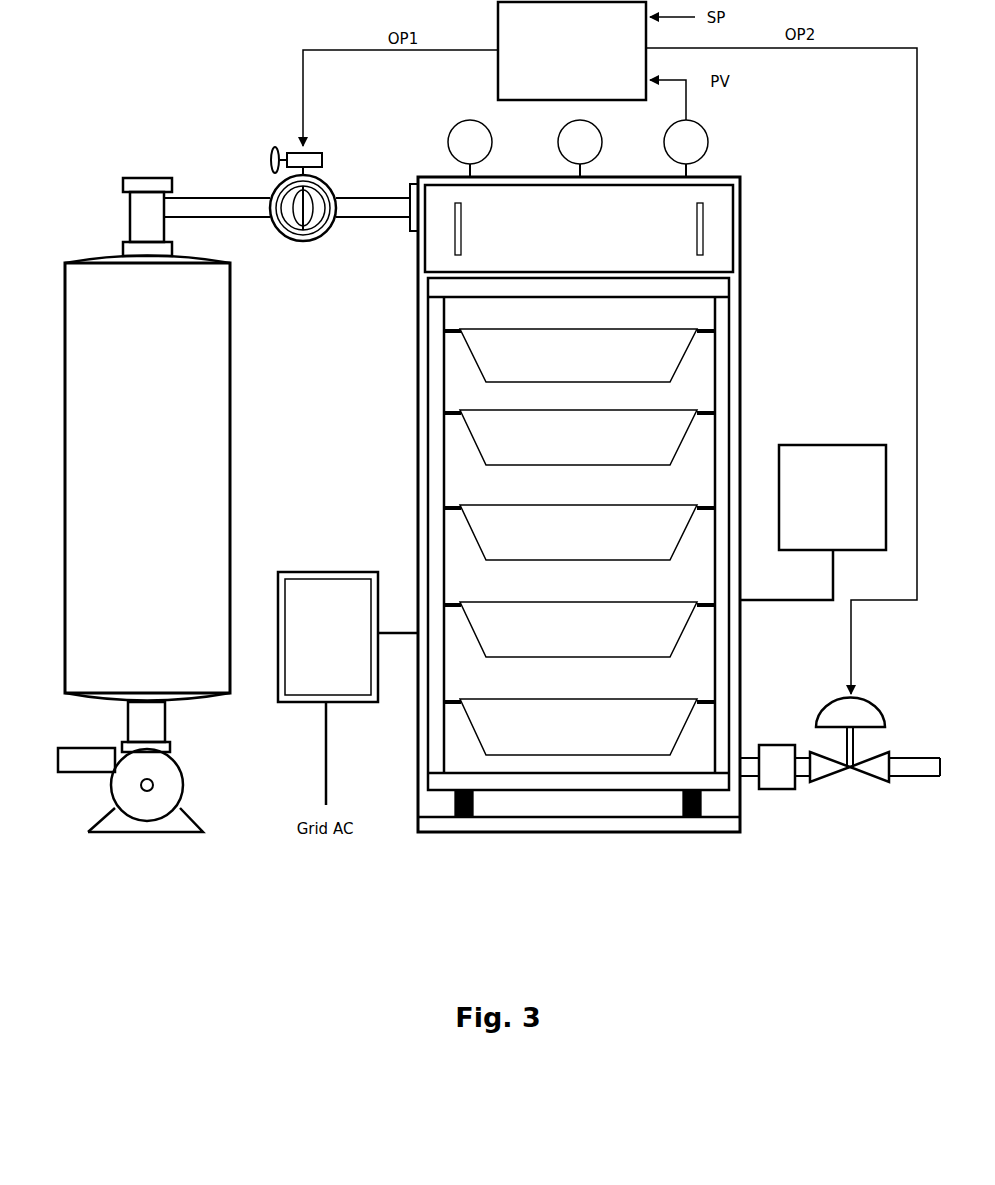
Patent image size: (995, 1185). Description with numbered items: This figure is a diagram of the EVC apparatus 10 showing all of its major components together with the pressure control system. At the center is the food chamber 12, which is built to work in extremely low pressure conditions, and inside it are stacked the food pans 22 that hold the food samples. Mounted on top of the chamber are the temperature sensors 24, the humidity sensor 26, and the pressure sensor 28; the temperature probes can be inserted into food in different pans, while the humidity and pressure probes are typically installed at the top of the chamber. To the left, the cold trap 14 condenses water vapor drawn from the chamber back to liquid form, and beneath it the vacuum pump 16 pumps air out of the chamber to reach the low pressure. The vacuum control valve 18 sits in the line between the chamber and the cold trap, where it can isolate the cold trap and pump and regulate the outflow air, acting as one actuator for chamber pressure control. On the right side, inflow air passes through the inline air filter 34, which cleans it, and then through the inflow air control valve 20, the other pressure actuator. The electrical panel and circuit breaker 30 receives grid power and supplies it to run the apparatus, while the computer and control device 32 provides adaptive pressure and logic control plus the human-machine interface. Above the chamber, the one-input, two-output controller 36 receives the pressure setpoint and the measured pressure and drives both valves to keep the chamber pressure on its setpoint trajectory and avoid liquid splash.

The EVC apparatus 10 is at (110, 153).
The food chamber 12 is at (745, 315).
The cold trap 14 is at (232, 420).
The vacuum pump 16 is at (182, 772).
The vacuum control valve 18 is at (326, 183).
The inflow air control valve 20 is at (870, 702).
The food pans 22 is at (683, 410).
The temperature sensors 24 is at (448, 142).
The humidity sensor 26 is at (602, 139).
The pressure sensor 28 is at (708, 139).
The electrical panel and circuit breaker 30 is at (318, 572).
The computer and control device 32 is at (828, 445).
The inline air filter 34 is at (776, 745).
The 1-Input-2-Output controller 36 is at (498, 40).